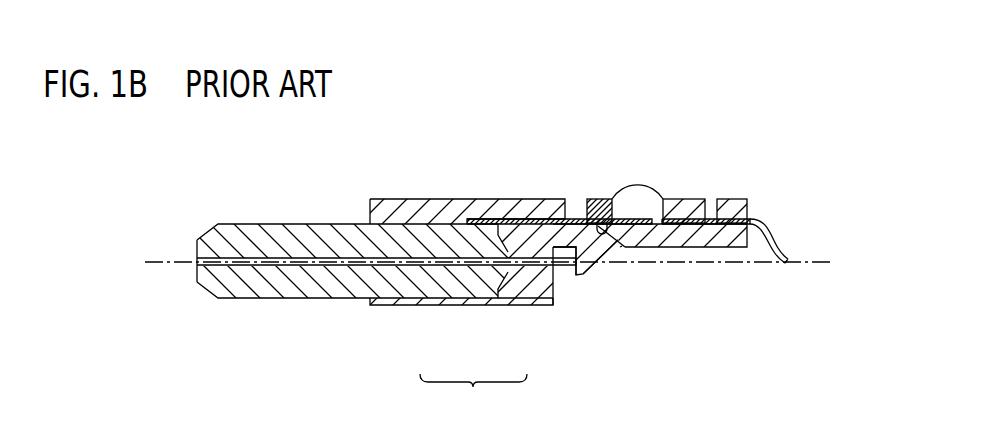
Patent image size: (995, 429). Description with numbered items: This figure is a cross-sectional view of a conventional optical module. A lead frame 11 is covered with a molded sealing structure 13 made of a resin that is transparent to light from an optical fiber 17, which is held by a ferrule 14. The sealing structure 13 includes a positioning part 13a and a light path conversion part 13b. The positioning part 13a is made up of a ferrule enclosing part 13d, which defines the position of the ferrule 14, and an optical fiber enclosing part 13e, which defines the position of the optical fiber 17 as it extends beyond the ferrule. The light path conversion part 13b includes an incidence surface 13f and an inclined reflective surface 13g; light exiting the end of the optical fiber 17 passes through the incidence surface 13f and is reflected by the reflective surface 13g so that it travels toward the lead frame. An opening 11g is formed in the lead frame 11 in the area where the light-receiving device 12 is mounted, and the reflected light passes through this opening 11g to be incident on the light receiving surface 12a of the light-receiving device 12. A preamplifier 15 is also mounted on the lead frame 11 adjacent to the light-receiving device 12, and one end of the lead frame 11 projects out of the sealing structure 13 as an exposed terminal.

The lead frame 11 is at (775, 232).
The opening 11g is at (620, 247).
The light-receiving device 12 is at (590, 199).
The light receiving surface 12a is at (602, 228).
The sealing structure 13 is at (465, 199).
The positioning part 13a is at (549, 307).
The light path conversion part 13b is at (583, 276).
The ferrule enclosing part 13d is at (440, 300).
The optical fiber enclosing part 13e is at (530, 275).
The incidence surface 13f is at (575, 277).
The reflective surface 13g is at (600, 268).
The ferrule 14 is at (307, 224).
The preamplifier 15 is at (682, 198).
The optical fiber 17 is at (272, 266).